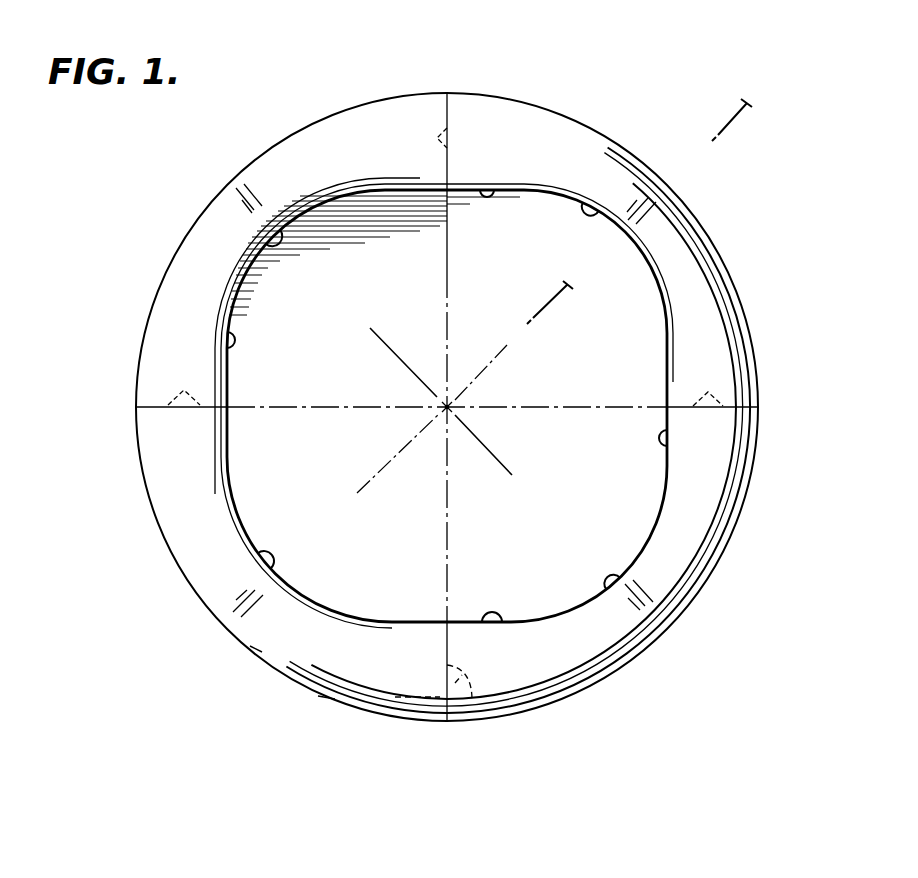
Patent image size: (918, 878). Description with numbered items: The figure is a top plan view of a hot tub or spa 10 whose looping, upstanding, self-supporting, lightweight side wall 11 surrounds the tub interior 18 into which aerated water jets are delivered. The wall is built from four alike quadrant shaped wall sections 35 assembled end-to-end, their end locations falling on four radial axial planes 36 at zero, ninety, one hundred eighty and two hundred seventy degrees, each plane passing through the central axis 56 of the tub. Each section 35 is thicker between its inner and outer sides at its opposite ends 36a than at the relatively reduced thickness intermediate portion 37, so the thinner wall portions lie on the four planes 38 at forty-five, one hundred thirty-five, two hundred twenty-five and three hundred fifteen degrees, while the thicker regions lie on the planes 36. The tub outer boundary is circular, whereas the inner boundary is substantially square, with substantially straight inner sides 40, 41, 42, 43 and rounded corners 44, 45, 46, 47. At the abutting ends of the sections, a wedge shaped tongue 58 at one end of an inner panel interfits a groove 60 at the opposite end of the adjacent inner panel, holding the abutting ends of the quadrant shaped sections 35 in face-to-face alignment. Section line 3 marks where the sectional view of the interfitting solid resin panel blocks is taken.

The section line 3 is at (742, 121).
The tub or spa 10 is at (594, 104).
The side wall 11 is at (160, 513).
The tub interior 18 is at (444, 403).
The quadrant shaped wall section 35 is at (178, 213).
The radial axial plane 36 is at (270, 412).
The section opposite end 36a is at (455, 97).
The reduced thickness intermediate portion 37 is at (238, 166).
The plane 38 is at (390, 350).
The straight inner side 40 is at (488, 188).
The straight inner side 41 is at (668, 442).
The straight inner side 42 is at (492, 612).
The straight inner side 43 is at (232, 343).
The rounded corner 44 is at (590, 206).
The rounded corner 45 is at (603, 588).
The rounded corner 46 is at (262, 560).
The rounded corner 47 is at (268, 238).
The central axis 56 is at (447, 412).
The wedge shaped tongue 58 is at (470, 702).
The groove 60 is at (446, 668).